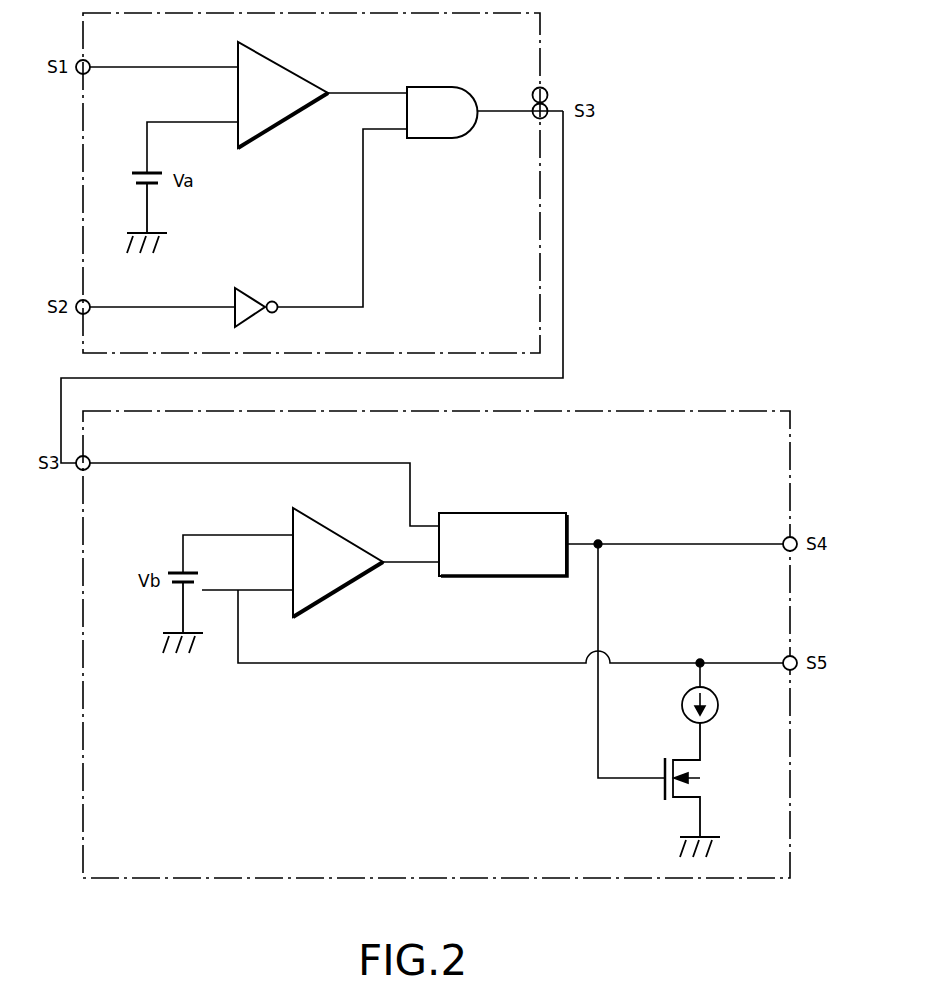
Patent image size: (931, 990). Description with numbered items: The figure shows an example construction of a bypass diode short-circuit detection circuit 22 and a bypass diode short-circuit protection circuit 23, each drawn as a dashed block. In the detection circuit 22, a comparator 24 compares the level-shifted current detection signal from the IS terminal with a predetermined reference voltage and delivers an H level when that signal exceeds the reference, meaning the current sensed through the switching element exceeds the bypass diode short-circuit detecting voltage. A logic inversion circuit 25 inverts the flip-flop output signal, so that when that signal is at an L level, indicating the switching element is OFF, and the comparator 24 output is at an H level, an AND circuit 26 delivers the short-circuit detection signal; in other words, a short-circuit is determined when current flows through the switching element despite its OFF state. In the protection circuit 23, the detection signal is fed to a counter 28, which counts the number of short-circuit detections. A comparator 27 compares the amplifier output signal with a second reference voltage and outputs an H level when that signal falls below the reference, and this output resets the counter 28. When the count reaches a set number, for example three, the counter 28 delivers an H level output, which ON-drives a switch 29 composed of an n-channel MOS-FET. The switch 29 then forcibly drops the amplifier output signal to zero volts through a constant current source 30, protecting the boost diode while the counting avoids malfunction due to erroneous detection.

The bypass diode short-circuit detection circuit 22 is at (480, 38).
The bypass diode short-circuit protection circuit 23 is at (737, 455).
The comparator 24 is at (275, 130).
The logic inversion circuit 25 is at (250, 287).
The AND circuit 26 is at (440, 139).
The comparator 27 is at (330, 597).
The counter 28 is at (507, 513).
The switch 29 is at (662, 792).
The constant current source 30 is at (713, 718).